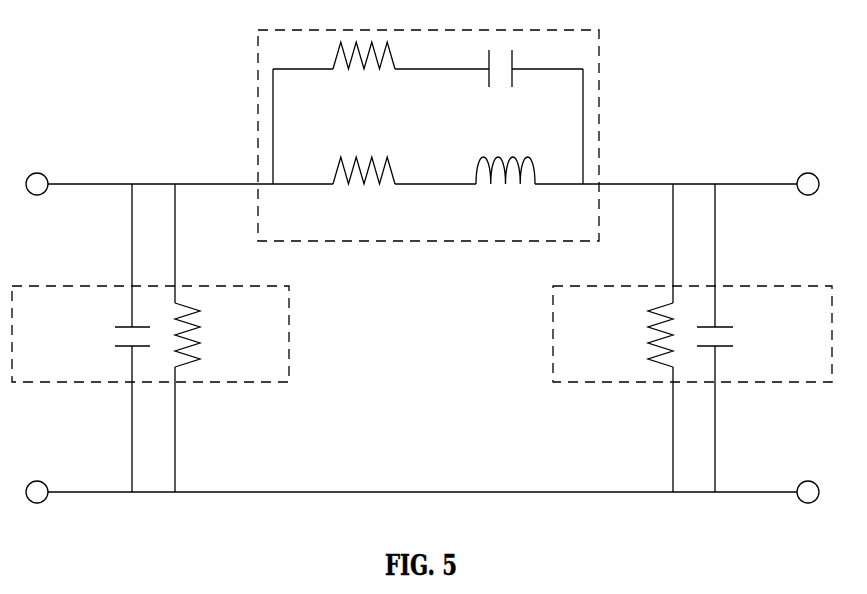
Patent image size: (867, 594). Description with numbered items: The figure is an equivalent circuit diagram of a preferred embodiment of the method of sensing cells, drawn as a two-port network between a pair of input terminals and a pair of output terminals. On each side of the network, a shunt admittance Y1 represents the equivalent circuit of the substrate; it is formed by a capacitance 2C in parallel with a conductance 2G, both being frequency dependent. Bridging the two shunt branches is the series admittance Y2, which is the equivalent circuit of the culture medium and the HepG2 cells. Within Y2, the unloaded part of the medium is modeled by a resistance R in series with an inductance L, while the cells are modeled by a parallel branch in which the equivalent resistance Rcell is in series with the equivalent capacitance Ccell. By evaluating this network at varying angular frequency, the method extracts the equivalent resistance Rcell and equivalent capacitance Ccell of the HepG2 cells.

The equivalent circuit of the substrate Y1 is at (422, 338).
The equivalent circuit of the culture medium and the HepG2 cells Y2 is at (428, 159).
The capacitance 2C is at (423, 338).
The conductance 2G is at (424, 338).
The resistance R is at (364, 191).
The inductance L is at (505, 191).
The equivalent resistance of the HepG2 cells Rcell is at (347, 85).
The equivalent capacitance of the HepG2 cells Ccell is at (498, 89).